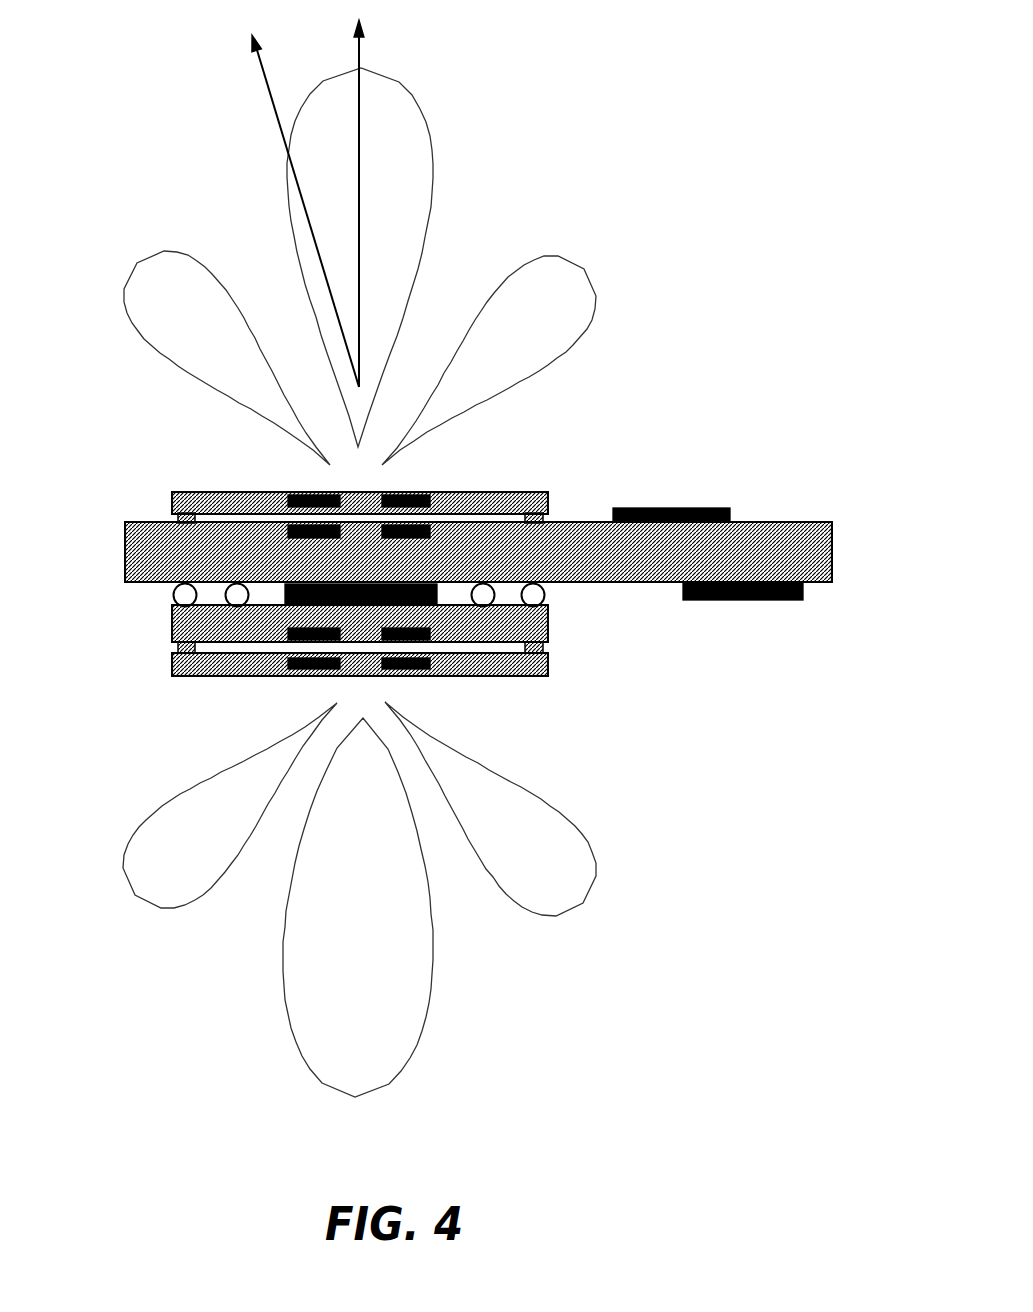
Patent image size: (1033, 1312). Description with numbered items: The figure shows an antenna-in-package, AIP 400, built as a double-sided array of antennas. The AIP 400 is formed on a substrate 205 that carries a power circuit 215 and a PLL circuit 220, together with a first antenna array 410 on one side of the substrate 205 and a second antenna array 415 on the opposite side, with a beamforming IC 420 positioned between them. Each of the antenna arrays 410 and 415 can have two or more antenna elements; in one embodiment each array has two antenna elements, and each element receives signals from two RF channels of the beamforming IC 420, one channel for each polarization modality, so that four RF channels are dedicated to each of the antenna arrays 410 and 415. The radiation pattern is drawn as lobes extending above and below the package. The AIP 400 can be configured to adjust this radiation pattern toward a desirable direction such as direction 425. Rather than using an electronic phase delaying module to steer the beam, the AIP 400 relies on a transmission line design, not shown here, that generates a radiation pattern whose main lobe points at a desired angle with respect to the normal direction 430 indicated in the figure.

The antenna-in-package (AIP) 400 is at (730, 48).
The substrate 205 is at (133, 584).
The power circuit 215 is at (687, 508).
The PLL circuit 220 is at (793, 601).
The antenna array 410 is at (178, 490).
The antenna array 415 is at (178, 678).
The beamforming IC 420 is at (423, 602).
The direction 425 is at (267, 82).
The normal direction 430 is at (362, 42).